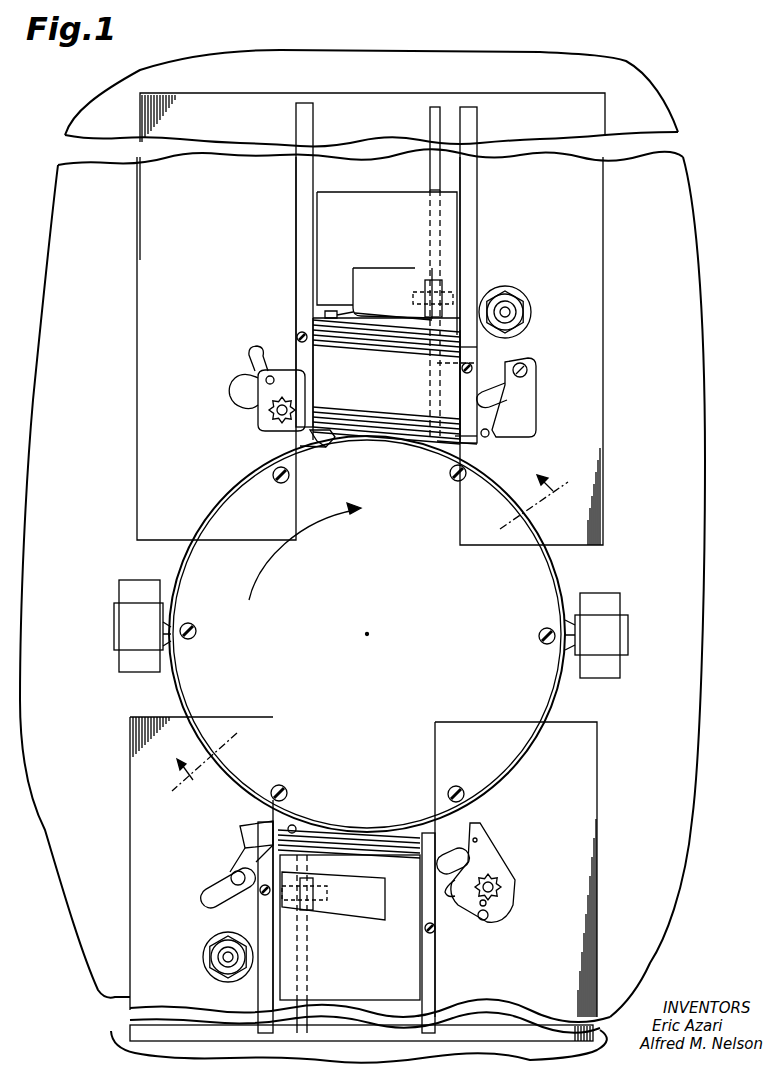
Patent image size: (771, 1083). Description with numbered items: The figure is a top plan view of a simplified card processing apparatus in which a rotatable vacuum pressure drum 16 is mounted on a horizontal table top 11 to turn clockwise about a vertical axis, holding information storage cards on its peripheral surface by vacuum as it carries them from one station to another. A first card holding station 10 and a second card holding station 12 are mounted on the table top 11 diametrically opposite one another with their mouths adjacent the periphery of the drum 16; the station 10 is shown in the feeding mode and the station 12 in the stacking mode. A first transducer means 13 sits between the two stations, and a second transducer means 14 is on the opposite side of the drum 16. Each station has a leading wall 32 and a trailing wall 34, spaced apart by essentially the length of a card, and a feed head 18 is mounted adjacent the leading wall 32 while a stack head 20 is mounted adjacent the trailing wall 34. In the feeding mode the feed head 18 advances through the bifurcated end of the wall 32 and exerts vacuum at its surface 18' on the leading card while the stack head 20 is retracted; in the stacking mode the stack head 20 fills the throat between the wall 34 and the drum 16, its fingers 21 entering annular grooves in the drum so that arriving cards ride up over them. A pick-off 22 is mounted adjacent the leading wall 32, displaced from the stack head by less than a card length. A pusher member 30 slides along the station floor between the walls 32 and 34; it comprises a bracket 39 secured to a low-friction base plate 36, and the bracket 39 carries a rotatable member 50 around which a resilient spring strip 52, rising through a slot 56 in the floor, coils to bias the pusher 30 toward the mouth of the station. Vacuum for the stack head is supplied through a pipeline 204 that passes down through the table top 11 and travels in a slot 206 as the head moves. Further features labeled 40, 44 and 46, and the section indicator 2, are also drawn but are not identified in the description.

The first card holding station 10 is at (375, 377).
The table top 11 is at (52, 230).
The second card holding station 12 is at (358, 964).
The first transducer means 13 is at (615, 638).
The second transducer means 14 is at (125, 628).
The vacuum pressure drum 16 is at (376, 623).
The feed head 18 is at (267, 399).
The feed head surface 18' is at (340, 447).
The stack head 20 is at (515, 420).
The fingers 21 is at (470, 440).
The pick-off 22 is at (325, 447).
The pusher member 30 is at (373, 285).
The leading wall 32 is at (297, 262).
The trailing wall 34 is at (478, 245).
The base plate 36 is at (360, 290).
The bracket 39 is at (385, 311).
The post shoulder 40 is at (474, 348).
The lower guide strip 44 is at (330, 420).
The stop tab 46 is at (330, 312).
The rotatable member 50 is at (440, 297).
The resilient spring strip 52 is at (445, 308).
The slot 56 is at (435, 181).
The pipeline 204 is at (495, 437).
The slot 206 is at (450, 440).
The section line 2- 2 is at (372, 639).